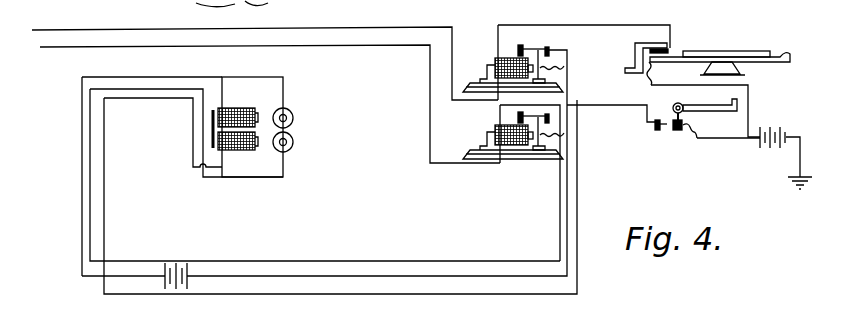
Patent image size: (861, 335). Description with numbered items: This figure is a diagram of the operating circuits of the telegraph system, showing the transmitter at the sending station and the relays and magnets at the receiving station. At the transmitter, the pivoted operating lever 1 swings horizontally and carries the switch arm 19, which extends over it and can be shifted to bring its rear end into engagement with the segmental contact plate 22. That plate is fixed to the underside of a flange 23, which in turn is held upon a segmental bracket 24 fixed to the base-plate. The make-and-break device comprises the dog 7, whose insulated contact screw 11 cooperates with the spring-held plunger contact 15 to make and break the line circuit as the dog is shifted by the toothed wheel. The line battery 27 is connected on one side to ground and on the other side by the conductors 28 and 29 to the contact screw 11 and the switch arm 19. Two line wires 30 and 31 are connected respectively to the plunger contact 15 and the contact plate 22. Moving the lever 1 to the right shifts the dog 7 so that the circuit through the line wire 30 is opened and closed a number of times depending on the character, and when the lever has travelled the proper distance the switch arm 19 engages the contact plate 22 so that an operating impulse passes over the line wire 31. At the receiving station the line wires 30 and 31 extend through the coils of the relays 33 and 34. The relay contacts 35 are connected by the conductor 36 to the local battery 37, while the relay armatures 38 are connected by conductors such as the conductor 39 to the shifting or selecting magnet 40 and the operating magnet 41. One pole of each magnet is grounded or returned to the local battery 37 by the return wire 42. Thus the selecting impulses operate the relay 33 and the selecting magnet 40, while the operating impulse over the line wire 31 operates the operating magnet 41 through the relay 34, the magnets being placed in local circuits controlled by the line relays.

The operating lever 1 is at (754, 63).
The dog 7 is at (708, 110).
The contact screw 11 is at (672, 129).
The plunger contact 15 is at (664, 130).
The switch arm 19 is at (720, 53).
The segmental contact plate 22 is at (646, 83).
The flange 23 is at (645, 38).
The segmental bracket 24 is at (635, 68).
The line battery 27 is at (770, 148).
The conductor 28 is at (725, 138).
The conductor 29 is at (750, 116).
The line wire 30 is at (315, 46).
The line wire 31 is at (352, 28).
The relay 33 is at (517, 145).
The relay 34 is at (495, 62).
The relay contacts 35 is at (520, 48).
The conductor 36 is at (567, 183).
The local battery 37 is at (187, 262).
The relay armatures 38 is at (549, 52).
The conductor 39 is at (150, 89).
The shifting or selecting magnet 40 is at (290, 130).
The operating magnet 41 is at (232, 108).
The return wire 42 is at (80, 178).